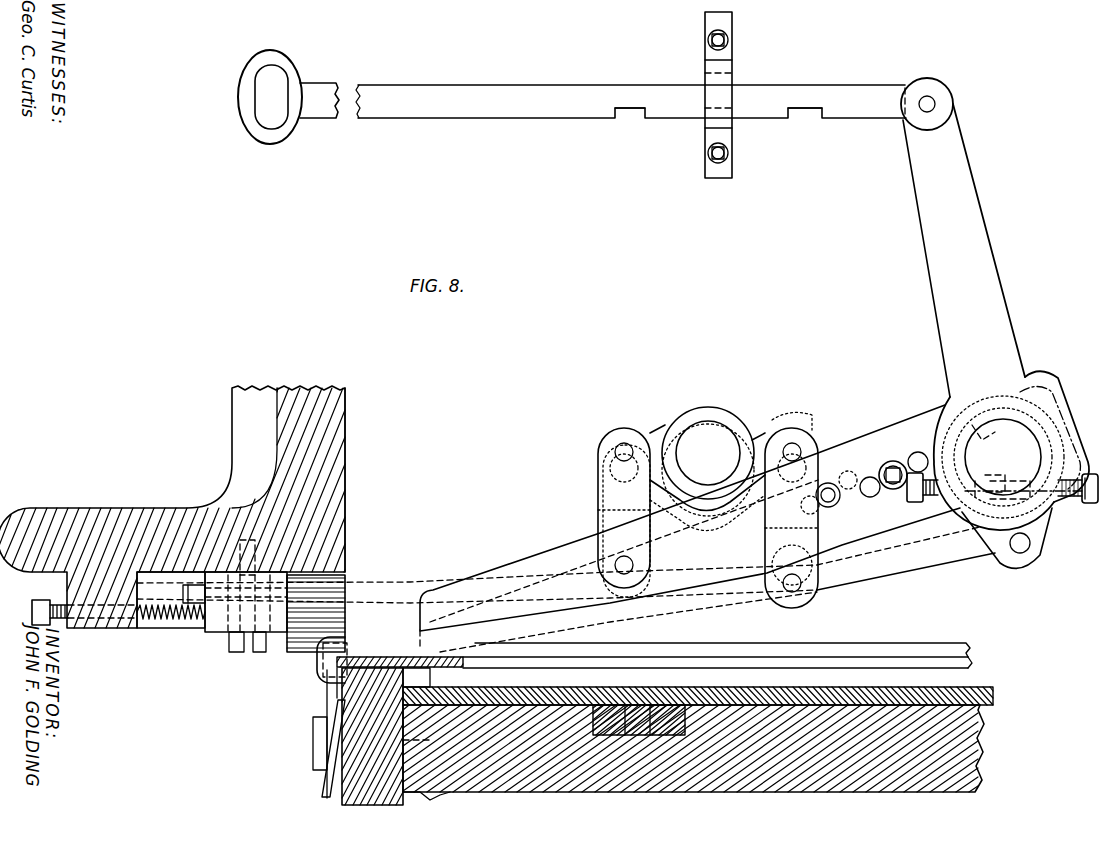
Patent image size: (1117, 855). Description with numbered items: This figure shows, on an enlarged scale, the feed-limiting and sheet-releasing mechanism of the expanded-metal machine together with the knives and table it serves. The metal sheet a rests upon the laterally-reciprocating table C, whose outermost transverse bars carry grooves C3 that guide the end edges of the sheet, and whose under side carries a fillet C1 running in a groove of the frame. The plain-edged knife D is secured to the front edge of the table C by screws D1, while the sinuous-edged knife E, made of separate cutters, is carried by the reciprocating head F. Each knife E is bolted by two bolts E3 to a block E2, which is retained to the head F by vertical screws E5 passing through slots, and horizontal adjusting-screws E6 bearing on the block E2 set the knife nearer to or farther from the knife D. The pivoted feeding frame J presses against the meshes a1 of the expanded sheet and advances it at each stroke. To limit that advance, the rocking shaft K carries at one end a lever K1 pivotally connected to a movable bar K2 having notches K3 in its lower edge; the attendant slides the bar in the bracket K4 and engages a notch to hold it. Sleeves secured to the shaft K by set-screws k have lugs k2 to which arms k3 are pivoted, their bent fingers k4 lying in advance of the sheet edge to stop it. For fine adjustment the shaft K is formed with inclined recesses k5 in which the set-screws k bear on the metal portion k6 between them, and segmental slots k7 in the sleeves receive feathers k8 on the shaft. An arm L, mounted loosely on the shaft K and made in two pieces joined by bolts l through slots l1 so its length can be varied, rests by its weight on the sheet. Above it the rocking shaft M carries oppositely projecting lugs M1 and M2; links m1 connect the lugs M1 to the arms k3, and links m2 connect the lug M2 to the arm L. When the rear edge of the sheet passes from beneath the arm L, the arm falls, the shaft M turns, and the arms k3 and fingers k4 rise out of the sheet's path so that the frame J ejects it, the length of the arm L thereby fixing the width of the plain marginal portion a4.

The movable notched bar K2 is at (595, 97).
The notches K3 is at (630, 114).
The bracket K4 is at (704, 136).
The lever K1 is at (964, 250).
The rocking shaft K is at (999, 463).
The segmental slots k7 is at (1012, 410).
The feathers k8 is at (975, 428).
The inclined recesses k5 is at (1032, 476).
The metal portion k6 is at (1003, 490).
The set-screws k is at (1090, 503).
The lugs k2 is at (1040, 540).
The arms k3 is at (848, 575).
The fingers k4 is at (318, 677).
The arm L is at (690, 527).
The bolts l is at (894, 466).
The slots l1 is at (864, 492).
The rocking shaft M is at (707, 469).
The lug M2 is at (654, 428).
The lugs M1 is at (760, 428).
The links m2 is at (598, 510).
The links m1 is at (765, 528).
The block E2 is at (188, 524).
The reciprocating head F is at (346, 497).
The horizontal adjusting-screws E6 is at (163, 620).
The bolts E3 is at (216, 622).
The vertical screws E5 is at (240, 652).
The sinuous-edged knife E is at (296, 636).
The metal sheet a is at (352, 657).
The plain marginal portion a4 is at (416, 678).
The meshes a1 is at (318, 772).
The grooves C3 is at (690, 655).
The fillet C1 is at (639, 720).
The laterally-reciprocating table C is at (985, 745).
The plain-edged knife D is at (396, 736).
The screws D1 is at (442, 745).
The frame or flap J is at (313, 752).